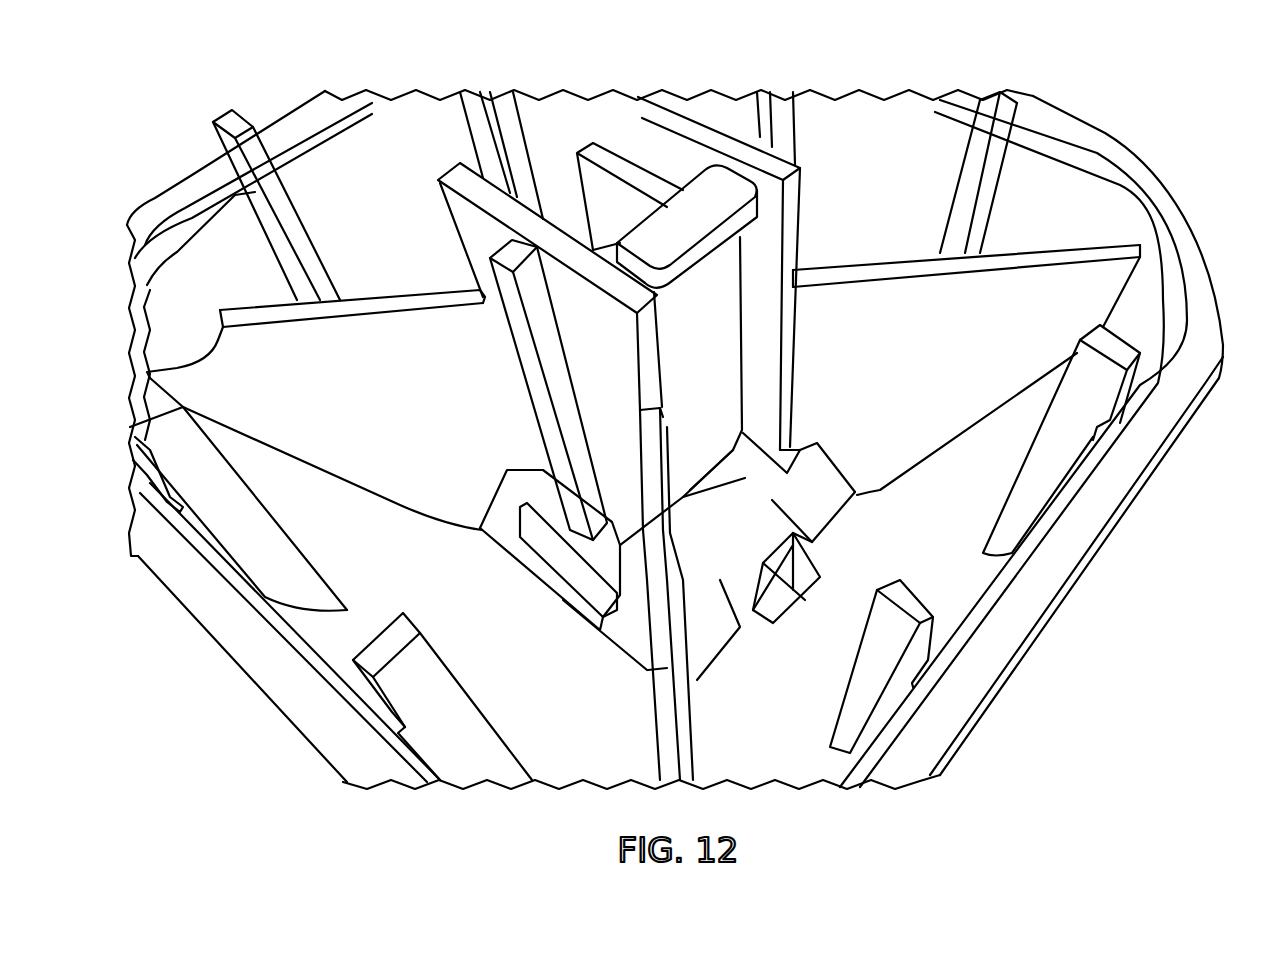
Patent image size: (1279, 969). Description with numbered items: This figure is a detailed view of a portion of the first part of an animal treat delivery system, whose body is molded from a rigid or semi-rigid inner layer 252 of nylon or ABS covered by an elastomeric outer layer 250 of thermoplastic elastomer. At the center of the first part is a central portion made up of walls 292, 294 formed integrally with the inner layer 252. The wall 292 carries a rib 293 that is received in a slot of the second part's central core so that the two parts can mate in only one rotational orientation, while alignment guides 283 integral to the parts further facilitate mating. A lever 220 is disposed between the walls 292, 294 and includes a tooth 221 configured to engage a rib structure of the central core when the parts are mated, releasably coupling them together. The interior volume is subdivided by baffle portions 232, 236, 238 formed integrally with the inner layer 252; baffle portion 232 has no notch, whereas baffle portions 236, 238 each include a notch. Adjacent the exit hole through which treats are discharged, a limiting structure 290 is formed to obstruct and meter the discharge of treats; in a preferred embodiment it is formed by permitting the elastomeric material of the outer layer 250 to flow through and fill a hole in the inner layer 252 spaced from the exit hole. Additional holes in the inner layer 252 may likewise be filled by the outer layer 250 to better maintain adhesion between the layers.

The lever 220 is at (612, 160).
The tooth 221 is at (687, 226).
The baffle portion 232 is at (966, 400).
The baffle portion 236 is at (307, 536).
The baffle portion 238 is at (648, 668).
The outer layer 250 is at (764, 560).
The inner layer 252 is at (925, 745).
The alignment guide 283 is at (238, 118).
The limiting structure 290 is at (810, 557).
The wall 292 is at (460, 213).
The rib 293 is at (500, 257).
The wall 294 is at (712, 122).